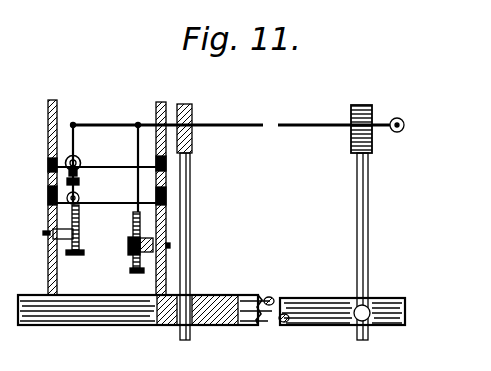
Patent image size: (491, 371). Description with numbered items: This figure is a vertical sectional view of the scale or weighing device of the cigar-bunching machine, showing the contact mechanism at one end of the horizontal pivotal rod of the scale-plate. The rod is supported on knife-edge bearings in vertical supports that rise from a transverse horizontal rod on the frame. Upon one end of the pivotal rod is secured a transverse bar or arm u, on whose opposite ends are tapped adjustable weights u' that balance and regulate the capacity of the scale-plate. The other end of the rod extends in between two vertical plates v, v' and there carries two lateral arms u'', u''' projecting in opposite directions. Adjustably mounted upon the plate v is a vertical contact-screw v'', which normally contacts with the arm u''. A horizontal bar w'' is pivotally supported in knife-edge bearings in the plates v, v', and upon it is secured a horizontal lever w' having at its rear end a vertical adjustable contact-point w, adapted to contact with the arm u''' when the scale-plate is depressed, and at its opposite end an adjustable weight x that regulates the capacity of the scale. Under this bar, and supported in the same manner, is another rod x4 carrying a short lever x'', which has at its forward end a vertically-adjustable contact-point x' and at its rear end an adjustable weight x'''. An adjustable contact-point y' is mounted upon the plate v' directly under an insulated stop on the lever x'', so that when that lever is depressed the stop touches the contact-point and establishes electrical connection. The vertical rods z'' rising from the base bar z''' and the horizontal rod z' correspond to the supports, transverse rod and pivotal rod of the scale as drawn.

The vertical plate v' is at (54, 183).
The vertical plate v is at (163, 182).
The vertical contact-screw v'' is at (128, 246).
The vertical rod z'' is at (272, 222).
The horizontal rod z' is at (231, 109).
The base bar z''' is at (342, 299).
The transverse bar or arm u is at (371, 121).
The adjustable weight u' is at (397, 117).
The lateral arm u'' is at (139, 152).
The lateral arm u''' is at (86, 147).
The vertical adjustable contact-point w is at (82, 152).
The horizontal lever w' is at (89, 157).
The horizontal bar w'' is at (108, 157).
The adjustable weight x is at (92, 156).
The vertically-adjustable contact-point x' is at (83, 182).
The short lever x'' is at (89, 195).
The adjustable weight x''' is at (84, 230).
The rod x4 is at (123, 204).
The adjustable contact-point y' is at (77, 238).